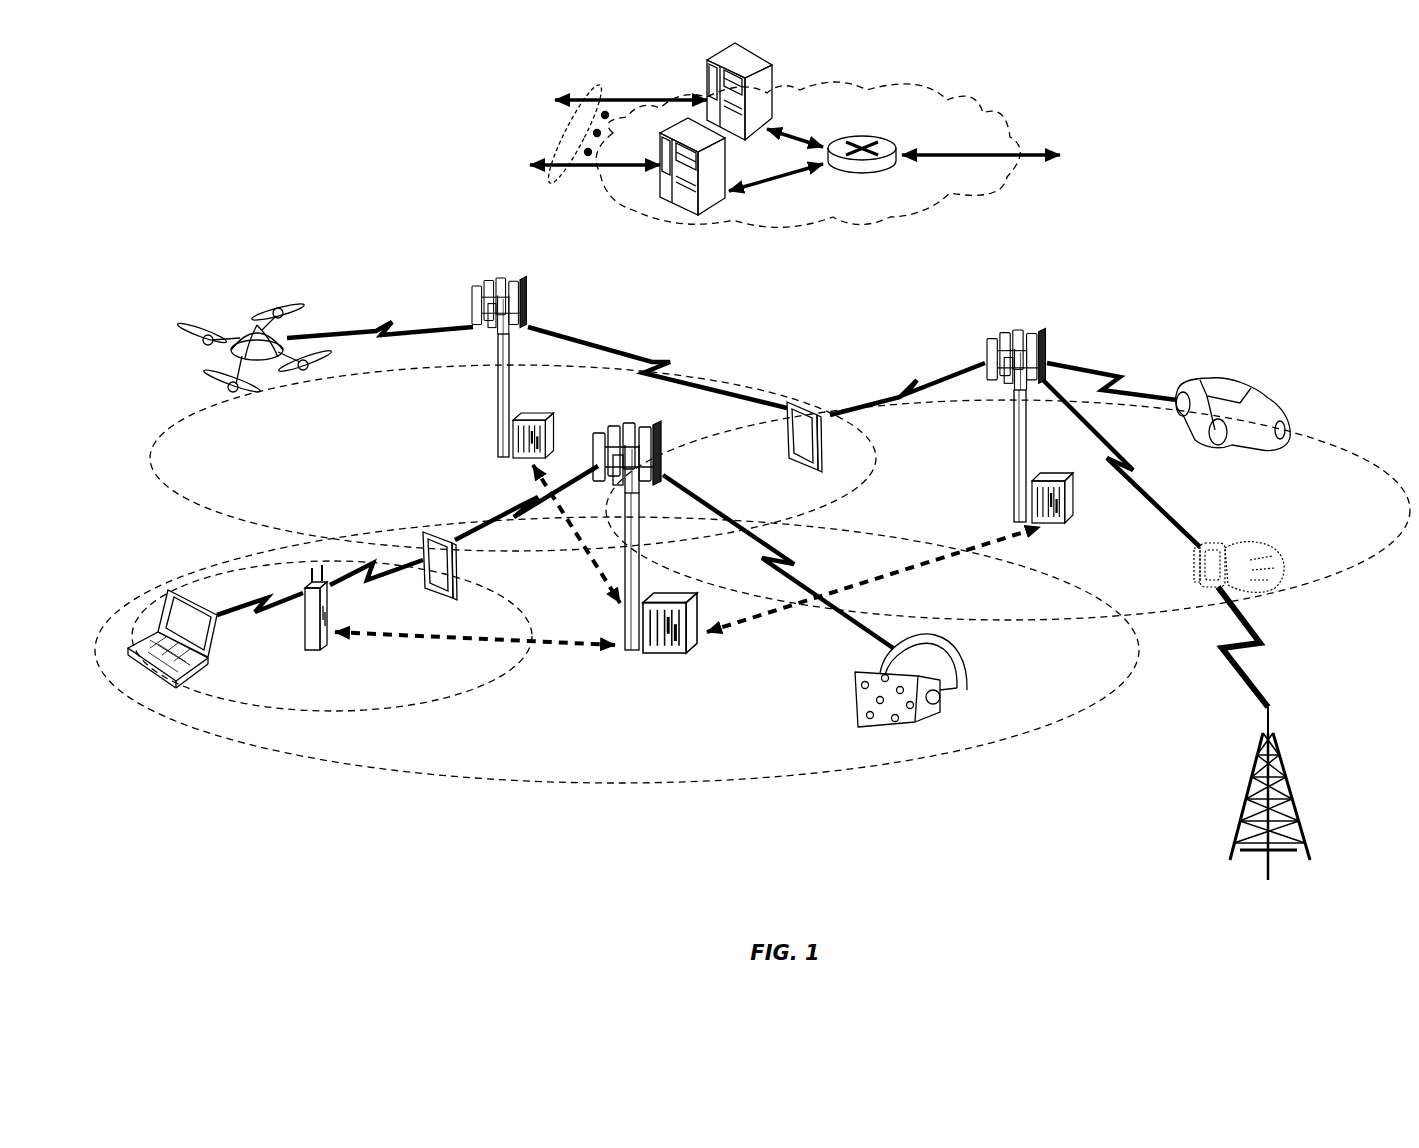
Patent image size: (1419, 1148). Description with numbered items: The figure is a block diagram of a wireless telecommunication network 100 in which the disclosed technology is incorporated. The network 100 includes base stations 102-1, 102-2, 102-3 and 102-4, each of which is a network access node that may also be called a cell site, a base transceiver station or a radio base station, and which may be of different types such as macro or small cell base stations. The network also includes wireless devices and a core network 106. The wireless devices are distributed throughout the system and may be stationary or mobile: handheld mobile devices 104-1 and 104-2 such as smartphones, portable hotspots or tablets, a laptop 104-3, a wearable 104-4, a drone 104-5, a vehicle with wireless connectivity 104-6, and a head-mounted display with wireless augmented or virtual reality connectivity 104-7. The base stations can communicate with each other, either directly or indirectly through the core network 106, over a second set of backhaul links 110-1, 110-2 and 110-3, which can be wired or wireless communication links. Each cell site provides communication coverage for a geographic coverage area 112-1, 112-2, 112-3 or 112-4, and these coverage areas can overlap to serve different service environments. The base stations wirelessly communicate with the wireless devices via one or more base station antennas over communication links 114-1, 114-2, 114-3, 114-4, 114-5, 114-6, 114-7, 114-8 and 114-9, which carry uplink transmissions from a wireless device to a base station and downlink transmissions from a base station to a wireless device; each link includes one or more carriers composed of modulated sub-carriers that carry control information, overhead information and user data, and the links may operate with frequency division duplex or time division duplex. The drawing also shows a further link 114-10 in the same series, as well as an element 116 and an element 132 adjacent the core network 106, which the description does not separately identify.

The wireless telecommunication network 100 is at (1304, 146).
The base station 102-1 is at (632, 655).
The base station 102-2 is at (496, 405).
The base station 102-3 is at (1013, 442).
The base station 102-4 is at (303, 640).
The handheld mobile device 104-1 is at (457, 578).
The handheld mobile device 104-2 is at (783, 437).
The laptop 104-3 is at (152, 673).
The wearable 104-4 is at (1215, 541).
The drone 104-5 is at (266, 375).
The vehicle with wireless connectivity 104-6 is at (1256, 392).
The head-mounted display with wireless AR/VR connectivity 104-7 is at (968, 671).
The core network 106 is at (896, 220).
The backhaul link 110-1 is at (373, 636).
The backhaul link 110-2 is at (935, 562).
The backhaul link 110-3 is at (593, 558).
The geographic coverage area 112-1 is at (565, 786).
The geographic coverage area 112-2 is at (437, 693).
The geographic coverage area 112-3 is at (214, 512).
The geographic coverage area 112-4 is at (1310, 439).
The communication link 114-1 is at (794, 564).
The communication link 114-2 is at (523, 511).
The communication link 114-3 is at (230, 612).
The communication link 114-4 is at (382, 578).
The communication link 114-5 is at (388, 328).
The communication link 114-6 is at (666, 362).
The communication link 114-7 is at (908, 383).
The communication link 114-8 is at (1140, 478).
The communication link 114-9 is at (1110, 372).
The wireless communication link 114-10 is at (1250, 650).
The radio tower 116 is at (1283, 773).
The external network link 132 is at (571, 178).